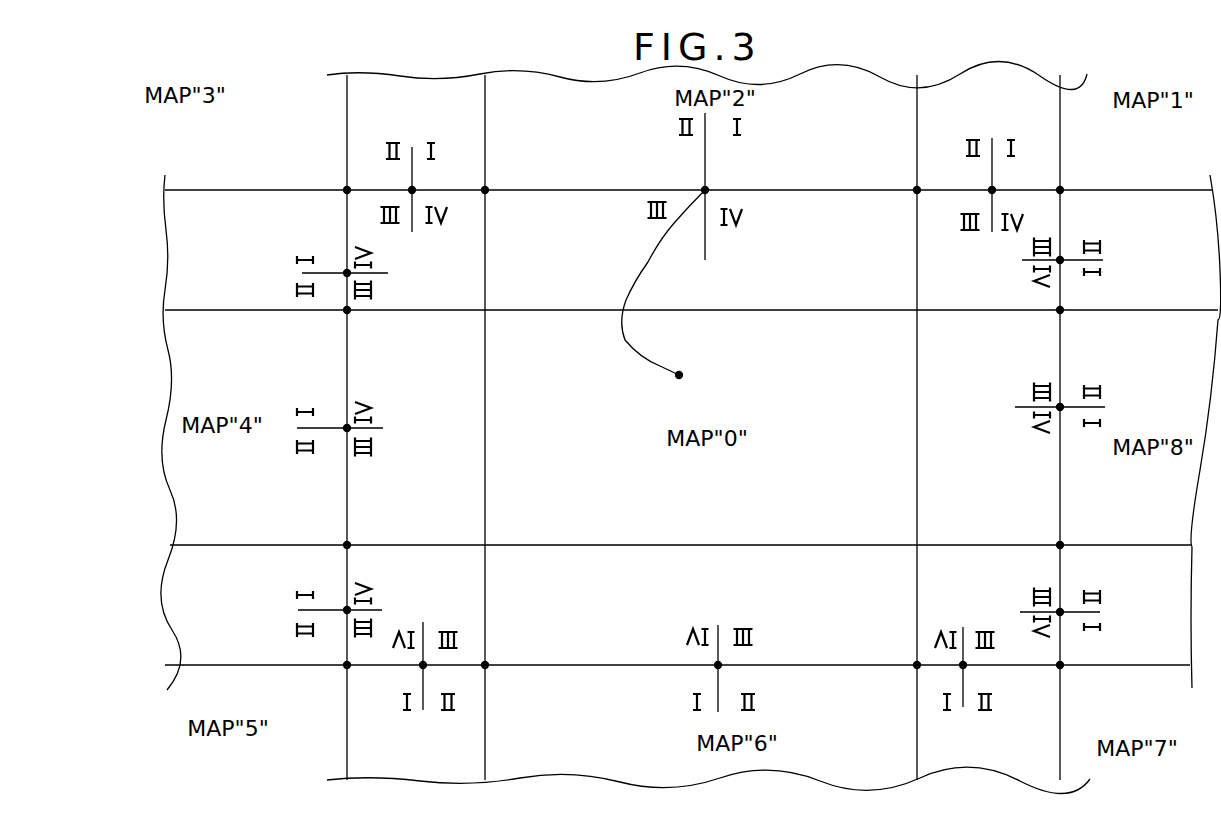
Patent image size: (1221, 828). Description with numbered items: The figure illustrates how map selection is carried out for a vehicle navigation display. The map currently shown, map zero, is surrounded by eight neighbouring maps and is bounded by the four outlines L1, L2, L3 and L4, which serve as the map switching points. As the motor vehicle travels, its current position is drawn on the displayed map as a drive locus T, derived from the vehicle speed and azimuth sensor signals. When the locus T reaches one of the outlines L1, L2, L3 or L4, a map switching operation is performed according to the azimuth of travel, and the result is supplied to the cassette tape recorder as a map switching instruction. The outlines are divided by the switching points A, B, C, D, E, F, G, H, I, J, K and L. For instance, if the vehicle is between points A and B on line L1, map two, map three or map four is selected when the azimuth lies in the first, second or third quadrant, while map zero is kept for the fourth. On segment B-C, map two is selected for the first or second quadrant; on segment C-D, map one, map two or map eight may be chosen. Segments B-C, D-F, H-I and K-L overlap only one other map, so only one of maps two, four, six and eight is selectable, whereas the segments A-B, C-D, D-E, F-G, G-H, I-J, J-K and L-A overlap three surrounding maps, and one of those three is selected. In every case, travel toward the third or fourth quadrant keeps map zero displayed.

The switching point A is at (345, 188).
The switching point B is at (487, 188).
The switching point C is at (918, 188).
The switching point D is at (1063, 193).
The switching point E is at (1058, 312).
The switching point F is at (1058, 545).
The switching point G is at (1062, 668).
The switching point H is at (912, 663).
The switching point I is at (487, 663).
The switching point J is at (350, 668).
The switching point K is at (348, 545).
The switching point L is at (350, 312).
The drive locus T is at (660, 360).
The outline L1 is at (622, 189).
The outline L2 is at (345, 498).
The outline L3 is at (652, 667).
The outline L4 is at (1063, 345).